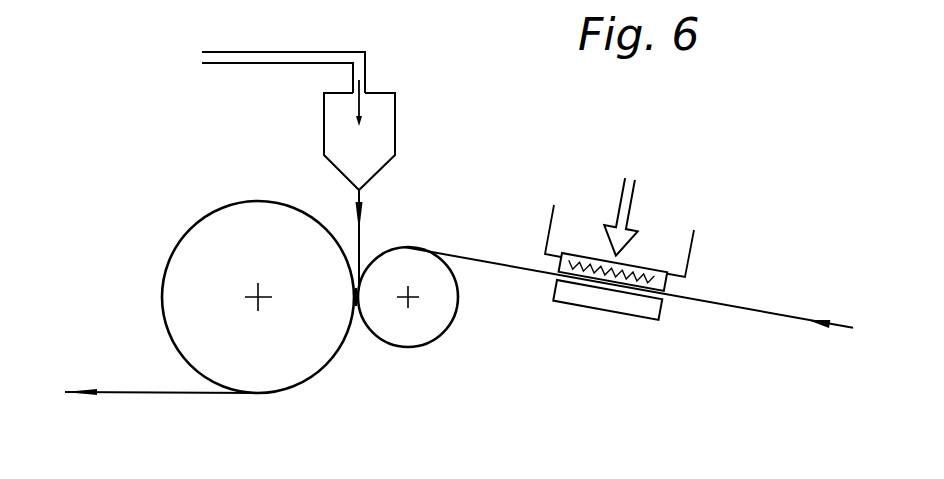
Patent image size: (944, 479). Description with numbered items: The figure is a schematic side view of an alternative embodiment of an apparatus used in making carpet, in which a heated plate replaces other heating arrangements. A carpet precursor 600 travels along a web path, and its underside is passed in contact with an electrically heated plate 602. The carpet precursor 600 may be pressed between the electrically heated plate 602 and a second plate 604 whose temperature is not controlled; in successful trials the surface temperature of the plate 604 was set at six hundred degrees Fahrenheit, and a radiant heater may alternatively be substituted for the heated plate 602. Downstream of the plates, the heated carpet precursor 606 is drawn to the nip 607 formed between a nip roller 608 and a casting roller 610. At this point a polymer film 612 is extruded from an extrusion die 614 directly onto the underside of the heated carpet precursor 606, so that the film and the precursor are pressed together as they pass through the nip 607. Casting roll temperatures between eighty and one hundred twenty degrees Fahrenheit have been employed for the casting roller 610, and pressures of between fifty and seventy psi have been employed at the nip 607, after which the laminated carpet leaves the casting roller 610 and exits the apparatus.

The carpet precursor 600 is at (842, 325).
The electrically heated plate 602 is at (585, 250).
The second plate 604 is at (593, 312).
The heated carpet precursor 606 is at (489, 260).
The nip 607 is at (353, 296).
The nip roller 608 is at (408, 337).
The casting roller 610 is at (267, 380).
The polymer film 612 is at (360, 245).
The extrusion die 614 is at (388, 127).